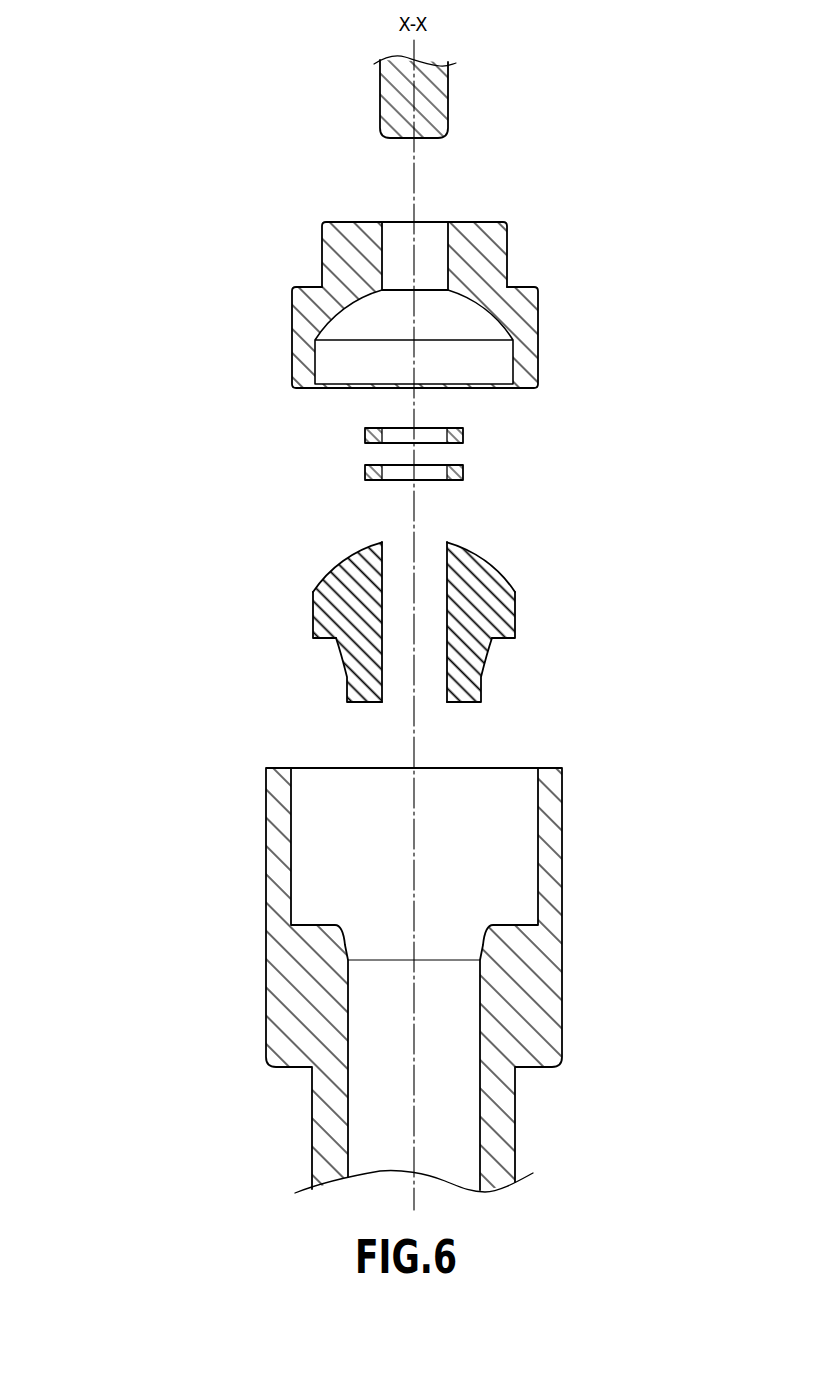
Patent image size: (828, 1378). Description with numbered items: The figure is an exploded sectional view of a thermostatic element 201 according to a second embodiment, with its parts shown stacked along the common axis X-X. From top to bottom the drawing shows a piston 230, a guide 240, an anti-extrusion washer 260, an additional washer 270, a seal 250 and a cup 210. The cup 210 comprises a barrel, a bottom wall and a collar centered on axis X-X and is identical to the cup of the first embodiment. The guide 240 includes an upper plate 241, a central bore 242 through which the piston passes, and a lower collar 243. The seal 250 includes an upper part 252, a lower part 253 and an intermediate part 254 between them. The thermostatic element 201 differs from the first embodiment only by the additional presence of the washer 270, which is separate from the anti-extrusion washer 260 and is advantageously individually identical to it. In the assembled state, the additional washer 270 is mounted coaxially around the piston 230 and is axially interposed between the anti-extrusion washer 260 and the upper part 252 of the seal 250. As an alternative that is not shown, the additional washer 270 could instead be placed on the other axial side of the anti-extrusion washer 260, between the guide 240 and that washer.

The thermostatic element 201 is at (133, 73).
The cup 210 is at (254, 853).
The piston 230 is at (368, 82).
The guide 240 is at (284, 298).
The upper plate 241 is at (487, 238).
The central bore 242 is at (445, 240).
The lower collar 243 is at (538, 312).
The seal 250 is at (312, 603).
The upper part 252 is at (455, 539).
The lower part 253 is at (497, 638).
The intermediate part 254 is at (490, 613).
The anti-extrusion washer 260 is at (364, 435).
The washer 270 is at (364, 472).